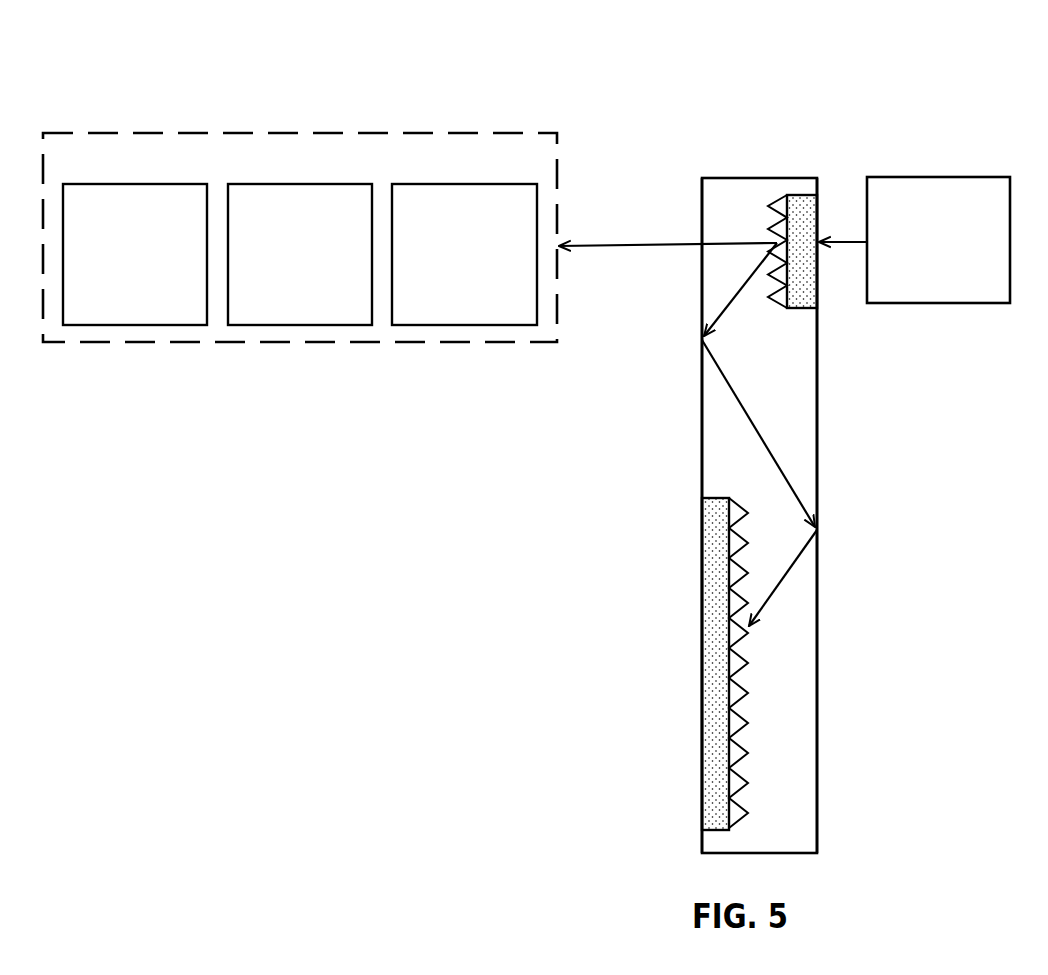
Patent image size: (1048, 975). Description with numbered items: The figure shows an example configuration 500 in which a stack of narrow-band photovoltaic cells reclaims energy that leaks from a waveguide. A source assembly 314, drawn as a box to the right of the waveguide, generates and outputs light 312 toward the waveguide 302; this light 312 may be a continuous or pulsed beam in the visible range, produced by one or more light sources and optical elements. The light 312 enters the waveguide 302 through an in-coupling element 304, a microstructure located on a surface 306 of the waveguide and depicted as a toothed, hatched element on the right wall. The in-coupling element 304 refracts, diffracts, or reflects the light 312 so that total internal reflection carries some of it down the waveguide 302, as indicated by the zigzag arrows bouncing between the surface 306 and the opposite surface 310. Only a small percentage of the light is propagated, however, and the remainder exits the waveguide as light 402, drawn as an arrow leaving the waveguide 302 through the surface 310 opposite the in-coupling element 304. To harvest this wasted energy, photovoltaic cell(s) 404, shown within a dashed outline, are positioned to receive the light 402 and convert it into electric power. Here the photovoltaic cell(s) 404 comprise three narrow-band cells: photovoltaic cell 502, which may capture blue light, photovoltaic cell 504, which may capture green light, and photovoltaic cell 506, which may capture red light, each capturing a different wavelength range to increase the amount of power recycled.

The example configuration 500 is at (743, 31).
The photovoltaic cell(s) 404 is at (423, 159).
The photovoltaic cell 506 is at (178, 279).
The photovoltaic cell 504 is at (343, 279).
The photovoltaic cell 502 is at (508, 279).
The light 402 is at (627, 246).
The waveguide 302 is at (759, 515).
The surface 310 is at (702, 472).
The surface 306 is at (1030, 836).
The in-coupling element 304 is at (1025, 82).
The source assembly 314 is at (960, 281).
The light 312 is at (843, 243).